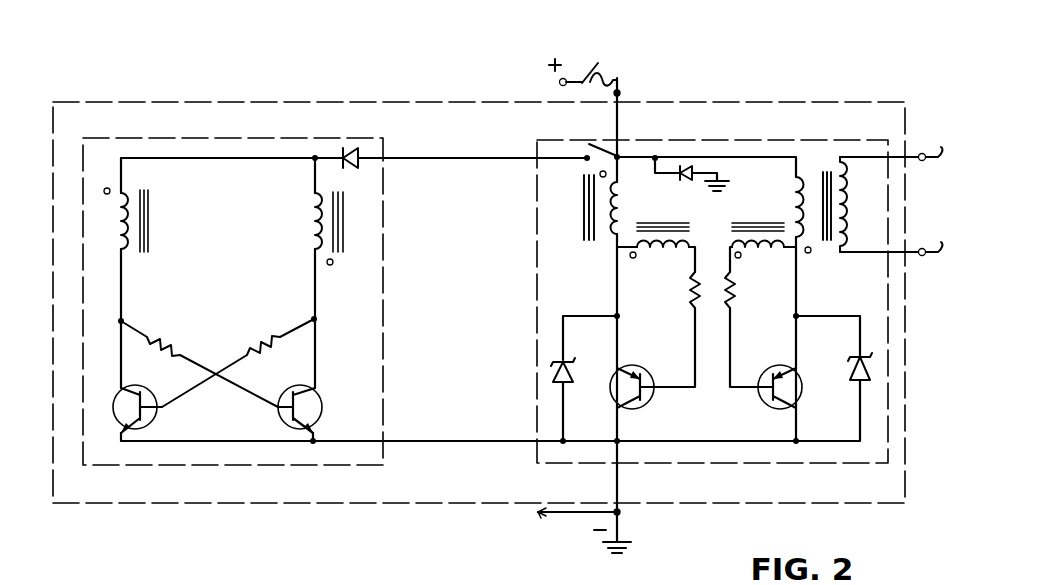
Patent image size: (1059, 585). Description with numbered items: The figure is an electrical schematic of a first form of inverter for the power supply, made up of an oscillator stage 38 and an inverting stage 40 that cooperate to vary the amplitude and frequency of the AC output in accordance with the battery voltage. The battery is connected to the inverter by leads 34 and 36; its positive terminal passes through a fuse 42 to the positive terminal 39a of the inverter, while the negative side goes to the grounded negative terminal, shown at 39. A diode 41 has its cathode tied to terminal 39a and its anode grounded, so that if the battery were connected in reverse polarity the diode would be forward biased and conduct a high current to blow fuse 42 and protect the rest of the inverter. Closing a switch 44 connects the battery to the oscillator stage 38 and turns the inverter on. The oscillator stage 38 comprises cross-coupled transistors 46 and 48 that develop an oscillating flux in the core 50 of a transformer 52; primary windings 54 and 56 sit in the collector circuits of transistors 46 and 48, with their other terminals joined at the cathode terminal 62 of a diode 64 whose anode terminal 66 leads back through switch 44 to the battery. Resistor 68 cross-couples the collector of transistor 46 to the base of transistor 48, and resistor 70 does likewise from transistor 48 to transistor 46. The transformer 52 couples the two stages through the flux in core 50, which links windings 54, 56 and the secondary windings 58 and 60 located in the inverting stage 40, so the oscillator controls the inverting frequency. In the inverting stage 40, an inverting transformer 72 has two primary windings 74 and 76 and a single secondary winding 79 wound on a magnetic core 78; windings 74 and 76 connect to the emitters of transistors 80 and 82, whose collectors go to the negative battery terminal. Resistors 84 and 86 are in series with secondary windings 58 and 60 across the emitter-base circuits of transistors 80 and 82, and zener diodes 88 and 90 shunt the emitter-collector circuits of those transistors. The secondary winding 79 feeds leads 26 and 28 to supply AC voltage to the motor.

The lead 26 is at (932, 156).
The lead 28 is at (926, 258).
The lead 34 is at (598, 63).
The lead 36 is at (560, 514).
The oscillator stage 38 is at (386, 364).
The negative terminal junction 39 is at (620, 512).
The positive terminal 39a is at (619, 92).
The inverting stage 40 is at (535, 302).
The diode 41 is at (690, 170).
The fuse 42 is at (608, 77).
The switch 44 is at (605, 148).
The transistor 46 is at (158, 422).
The transistor 48 is at (280, 418).
The core 50 is at (148, 228).
The transformer 52 is at (164, 208).
The primary winding 54 is at (124, 252).
The primary winding 56 is at (312, 250).
The secondary winding 58 is at (662, 252).
The secondary winding 60 is at (772, 252).
The cathode terminal 62 is at (340, 150).
The diode 64 is at (350, 152).
The anode terminal 66 is at (365, 157).
The resistor 68 is at (178, 345).
The resistor 70 is at (265, 345).
The inverting transformer 72 is at (715, 200).
The primary winding 74 is at (605, 245).
The primary winding 76 is at (815, 248).
The magnetic core 78 is at (581, 223).
The secondary winding 79 is at (853, 202).
The transistor 80 is at (648, 402).
The transistor 82 is at (760, 400).
The resistor 84 is at (692, 300).
The resistor 86 is at (735, 298).
The zener diode 88 is at (568, 380).
The zener diode 90 is at (858, 378).